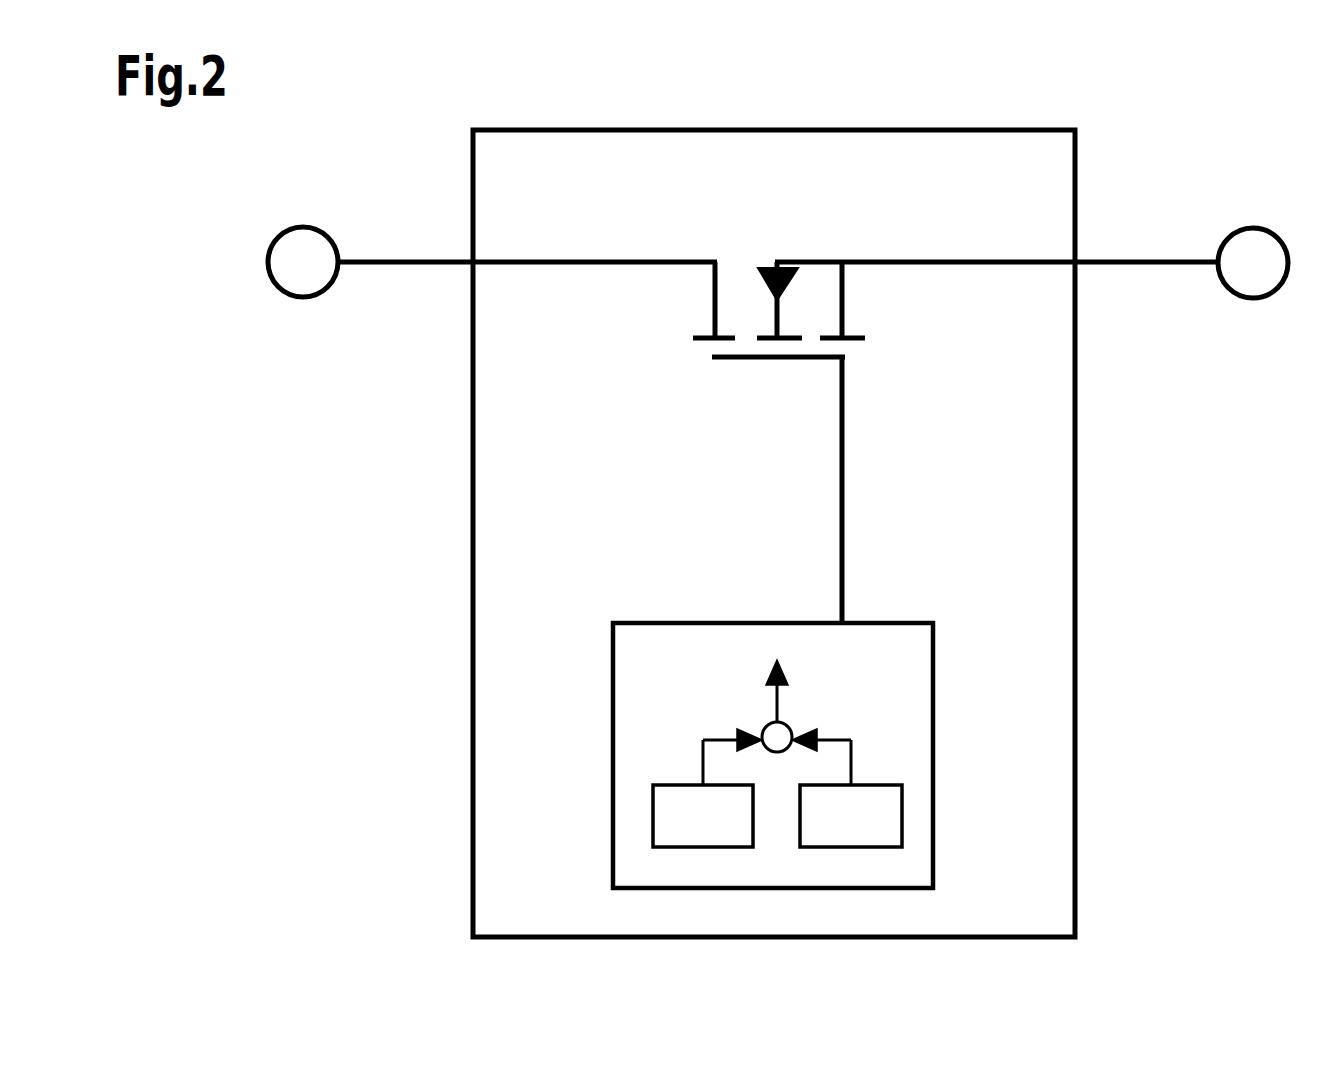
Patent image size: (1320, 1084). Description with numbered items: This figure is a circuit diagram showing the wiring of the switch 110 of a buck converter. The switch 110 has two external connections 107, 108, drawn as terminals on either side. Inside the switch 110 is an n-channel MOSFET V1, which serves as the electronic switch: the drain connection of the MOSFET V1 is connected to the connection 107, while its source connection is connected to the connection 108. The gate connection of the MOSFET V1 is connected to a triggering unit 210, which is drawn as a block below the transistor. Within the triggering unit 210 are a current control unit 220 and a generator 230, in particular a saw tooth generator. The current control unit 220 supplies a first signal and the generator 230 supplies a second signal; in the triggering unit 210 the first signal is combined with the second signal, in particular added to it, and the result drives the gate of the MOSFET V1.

The connection 107 is at (492, 294).
The connection 108 is at (1033, 298).
The switch 110 is at (772, 504).
The n-channel MOSFET V1 is at (779, 411).
The triggering unit 210 is at (773, 726).
The current control unit 220 is at (703, 816).
The generator 230 is at (851, 816).